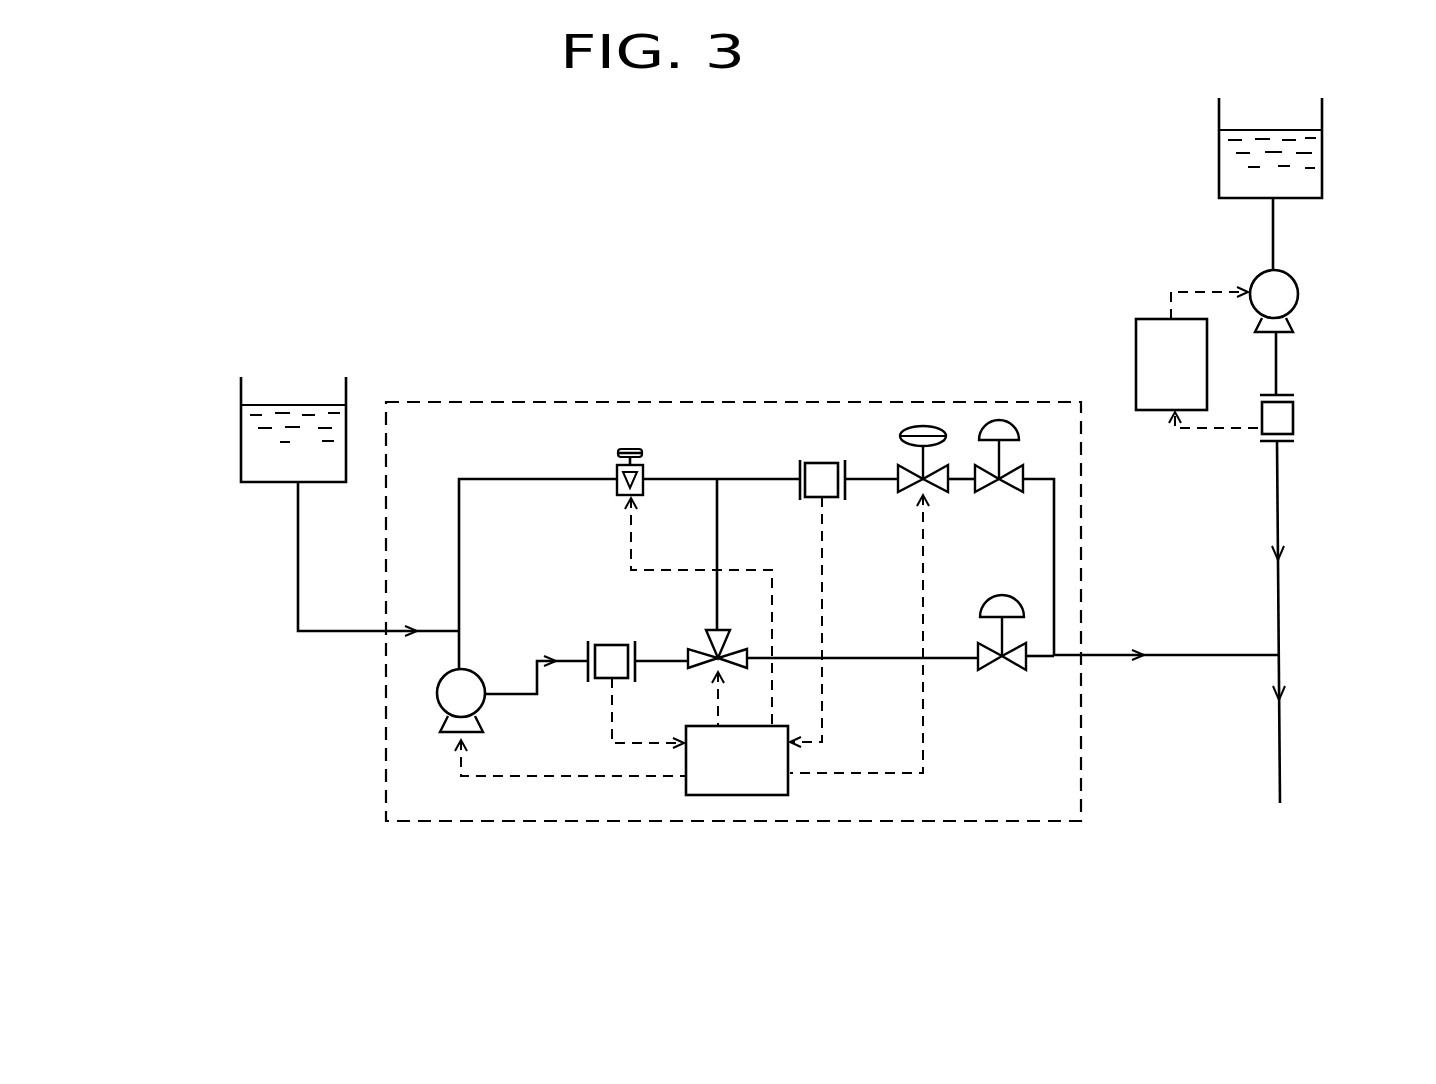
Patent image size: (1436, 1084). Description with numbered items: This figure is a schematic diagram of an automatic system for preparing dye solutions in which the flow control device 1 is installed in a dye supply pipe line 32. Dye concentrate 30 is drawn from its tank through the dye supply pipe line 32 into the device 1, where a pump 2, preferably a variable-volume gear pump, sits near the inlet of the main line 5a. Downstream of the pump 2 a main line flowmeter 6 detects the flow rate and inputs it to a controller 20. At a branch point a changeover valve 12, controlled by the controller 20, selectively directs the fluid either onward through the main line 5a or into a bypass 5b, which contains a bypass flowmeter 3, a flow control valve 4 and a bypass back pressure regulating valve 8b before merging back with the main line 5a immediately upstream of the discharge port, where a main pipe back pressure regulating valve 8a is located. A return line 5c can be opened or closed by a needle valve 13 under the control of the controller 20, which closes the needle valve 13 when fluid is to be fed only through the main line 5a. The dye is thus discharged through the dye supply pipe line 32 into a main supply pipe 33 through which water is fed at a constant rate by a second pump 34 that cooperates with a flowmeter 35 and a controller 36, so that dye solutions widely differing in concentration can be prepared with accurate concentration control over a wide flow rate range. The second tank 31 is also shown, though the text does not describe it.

The device 1 is at (985, 394).
The pump 2 is at (445, 708).
The bypass flowmeter 3 is at (822, 462).
The flow control valve 4 is at (945, 470).
The main line 5a is at (500, 697).
The bypass 5b is at (722, 520).
The return line 5c is at (515, 481).
The main line flowmeter 6 is at (606, 643).
The main pipe back pressure regulating valve 8a is at (1008, 668).
The bypass back pressure regulating valve 8b is at (1000, 485).
The changeover valve 12 is at (700, 652).
The needle valve 13 is at (617, 476).
The controller 20 is at (790, 785).
The dye concentrate 30 is at (281, 377).
The liquid tank 31 is at (1327, 160).
The dye supply pipe line 32 is at (298, 590).
The main supply pipe 33 is at (1282, 668).
The pump 34 is at (1298, 295).
The flowmeter 35 is at (1295, 418).
The controller 36 is at (1152, 318).